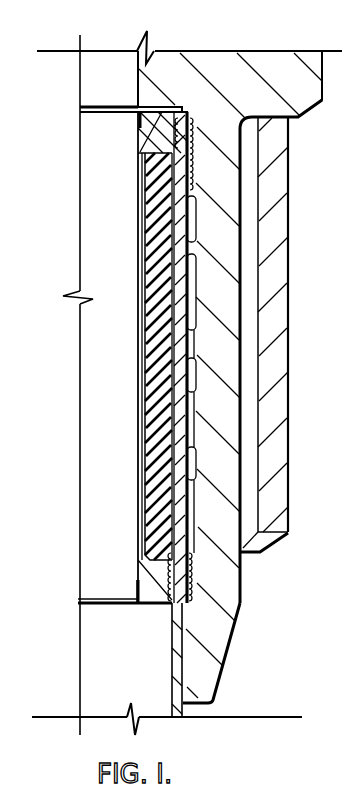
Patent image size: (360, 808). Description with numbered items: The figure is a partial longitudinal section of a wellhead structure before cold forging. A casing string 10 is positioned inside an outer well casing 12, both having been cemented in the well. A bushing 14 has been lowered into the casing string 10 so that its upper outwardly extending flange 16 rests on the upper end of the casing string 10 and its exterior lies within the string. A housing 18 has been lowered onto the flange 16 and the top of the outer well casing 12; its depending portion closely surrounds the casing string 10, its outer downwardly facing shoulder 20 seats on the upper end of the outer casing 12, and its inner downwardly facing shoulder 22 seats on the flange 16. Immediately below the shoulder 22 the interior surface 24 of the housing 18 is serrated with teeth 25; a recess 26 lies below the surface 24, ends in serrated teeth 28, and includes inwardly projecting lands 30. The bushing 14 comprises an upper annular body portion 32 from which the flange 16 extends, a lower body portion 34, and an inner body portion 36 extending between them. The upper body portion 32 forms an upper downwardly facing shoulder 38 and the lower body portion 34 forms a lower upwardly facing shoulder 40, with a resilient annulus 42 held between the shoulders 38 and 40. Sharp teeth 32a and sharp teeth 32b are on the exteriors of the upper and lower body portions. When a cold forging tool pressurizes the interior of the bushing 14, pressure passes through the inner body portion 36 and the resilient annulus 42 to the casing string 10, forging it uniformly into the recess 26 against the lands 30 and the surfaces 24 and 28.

The casing string 10 is at (185, 690).
The outer well casing 12 is at (290, 494).
The bushing 14 is at (133, 600).
The flange 16 is at (187, 135).
The housing 18 is at (243, 212).
The outer downwardly facing shoulder 20 is at (298, 119).
The inner downwardly facing shoulder 22 is at (145, 153).
The interior surface 24 is at (143, 211).
The teeth 25 is at (143, 193).
The recess 26 is at (140, 323).
The serrated teeth 28 is at (172, 604).
The lands 30 is at (147, 268).
The upper annular body portion 32 is at (140, 122).
The sharp teeth 32a is at (181, 107).
The sharp teeth 32b is at (190, 585).
The lower body portion 34 is at (133, 573).
The inner body portion 36 is at (135, 503).
The upper downwardly facing shoulder 38 is at (143, 184).
The lower upwardly facing shoulder 40 is at (147, 555).
The resilient annulus 42 is at (197, 300).